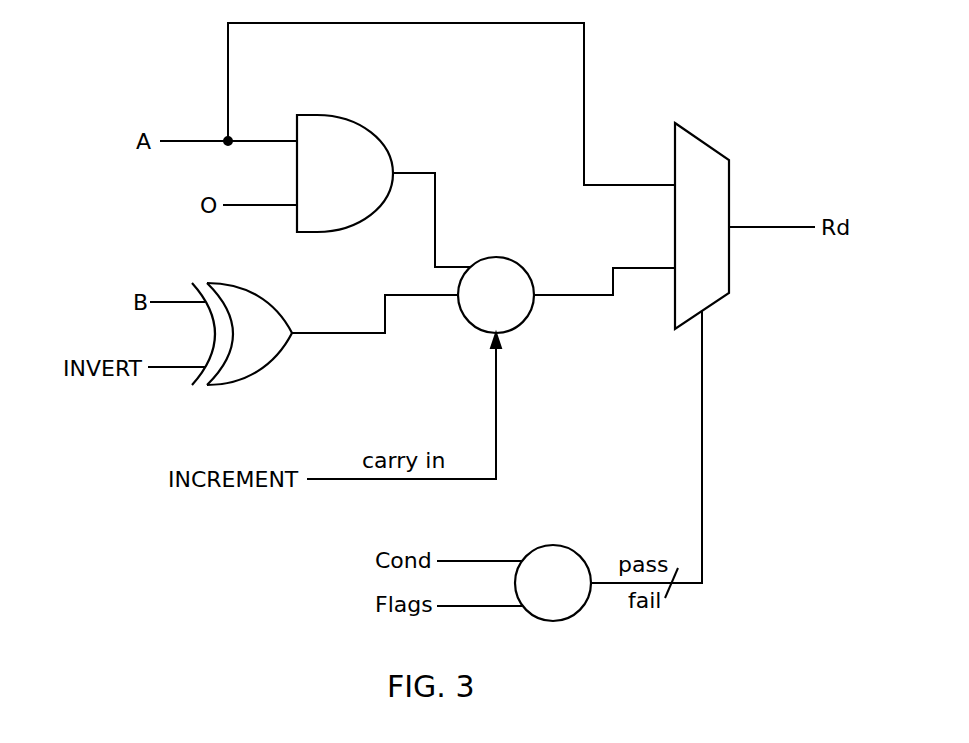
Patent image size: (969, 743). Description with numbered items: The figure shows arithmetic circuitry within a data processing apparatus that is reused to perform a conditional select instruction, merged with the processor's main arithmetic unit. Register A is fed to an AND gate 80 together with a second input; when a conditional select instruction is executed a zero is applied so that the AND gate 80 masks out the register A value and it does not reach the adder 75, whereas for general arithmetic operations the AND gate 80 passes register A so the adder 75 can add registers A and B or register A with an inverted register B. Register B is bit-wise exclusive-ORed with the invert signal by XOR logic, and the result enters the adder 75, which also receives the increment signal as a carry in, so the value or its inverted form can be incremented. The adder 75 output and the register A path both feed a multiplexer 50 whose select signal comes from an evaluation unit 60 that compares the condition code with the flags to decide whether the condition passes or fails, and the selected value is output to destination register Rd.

The AND gate 80 is at (357, 122).
The adder 75 is at (496, 257).
The multiplexer 50 is at (712, 148).
The evaluation unit 60 is at (553, 545).